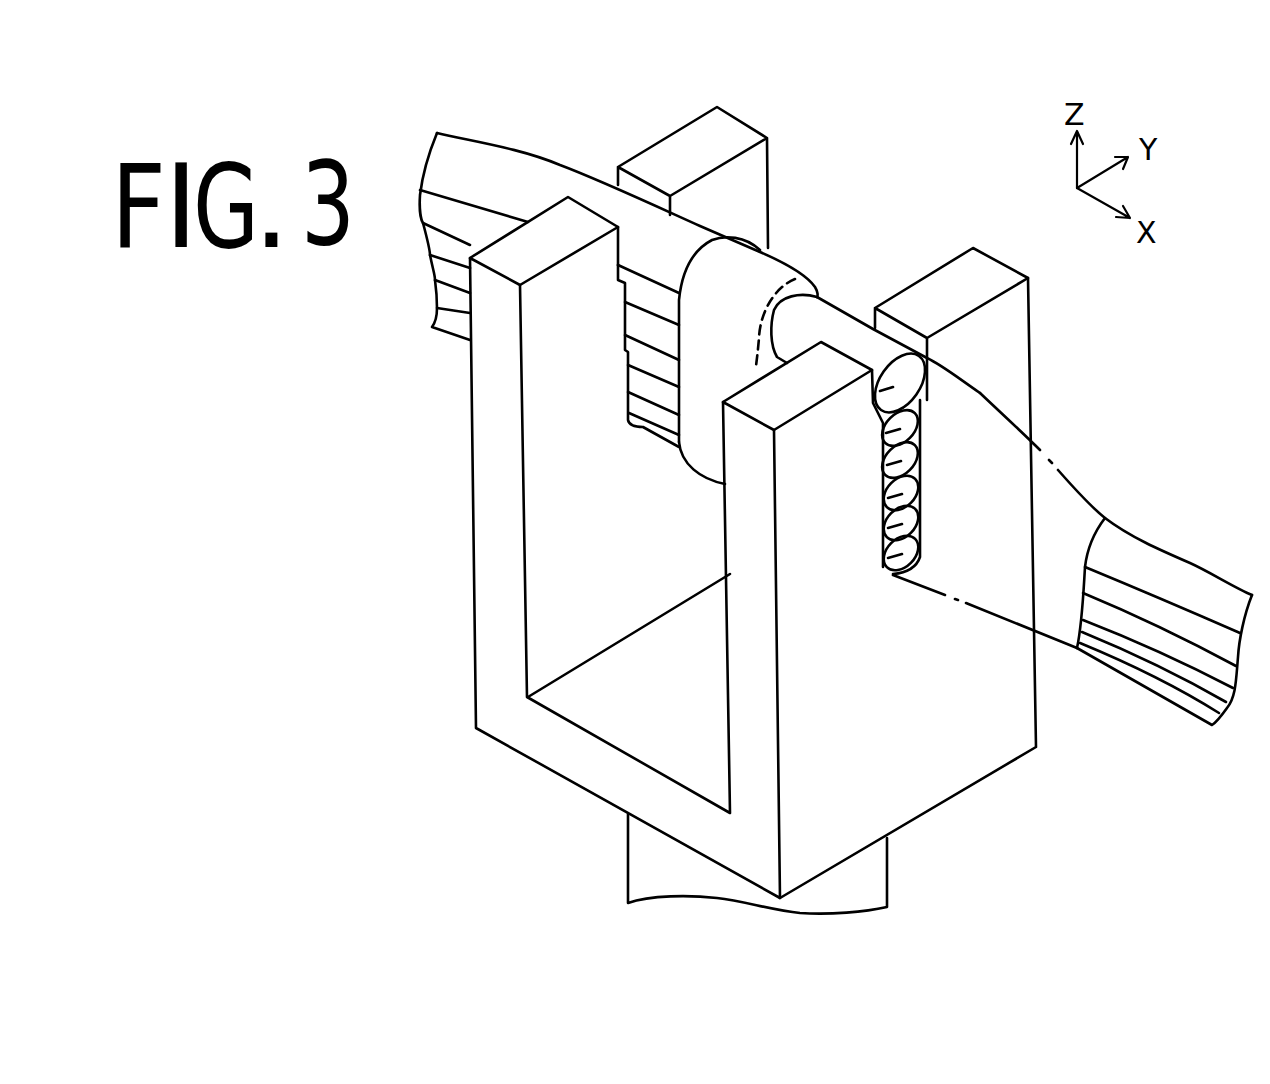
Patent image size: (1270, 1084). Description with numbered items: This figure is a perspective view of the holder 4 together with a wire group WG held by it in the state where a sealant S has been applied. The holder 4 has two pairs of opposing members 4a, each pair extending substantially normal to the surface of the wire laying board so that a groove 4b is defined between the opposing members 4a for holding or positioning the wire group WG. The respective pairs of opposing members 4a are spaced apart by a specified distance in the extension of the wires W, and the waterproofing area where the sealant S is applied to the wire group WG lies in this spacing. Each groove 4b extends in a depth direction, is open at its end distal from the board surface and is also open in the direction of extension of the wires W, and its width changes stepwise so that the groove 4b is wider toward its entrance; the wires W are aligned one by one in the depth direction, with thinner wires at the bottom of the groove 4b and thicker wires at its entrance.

The holder 4 is at (797, 508).
The opposing members 4a is at (740, 186).
The groove 4b is at (648, 193).
The wire group WG is at (574, 149).
The sealant S is at (705, 352).
The wires W is at (903, 556).